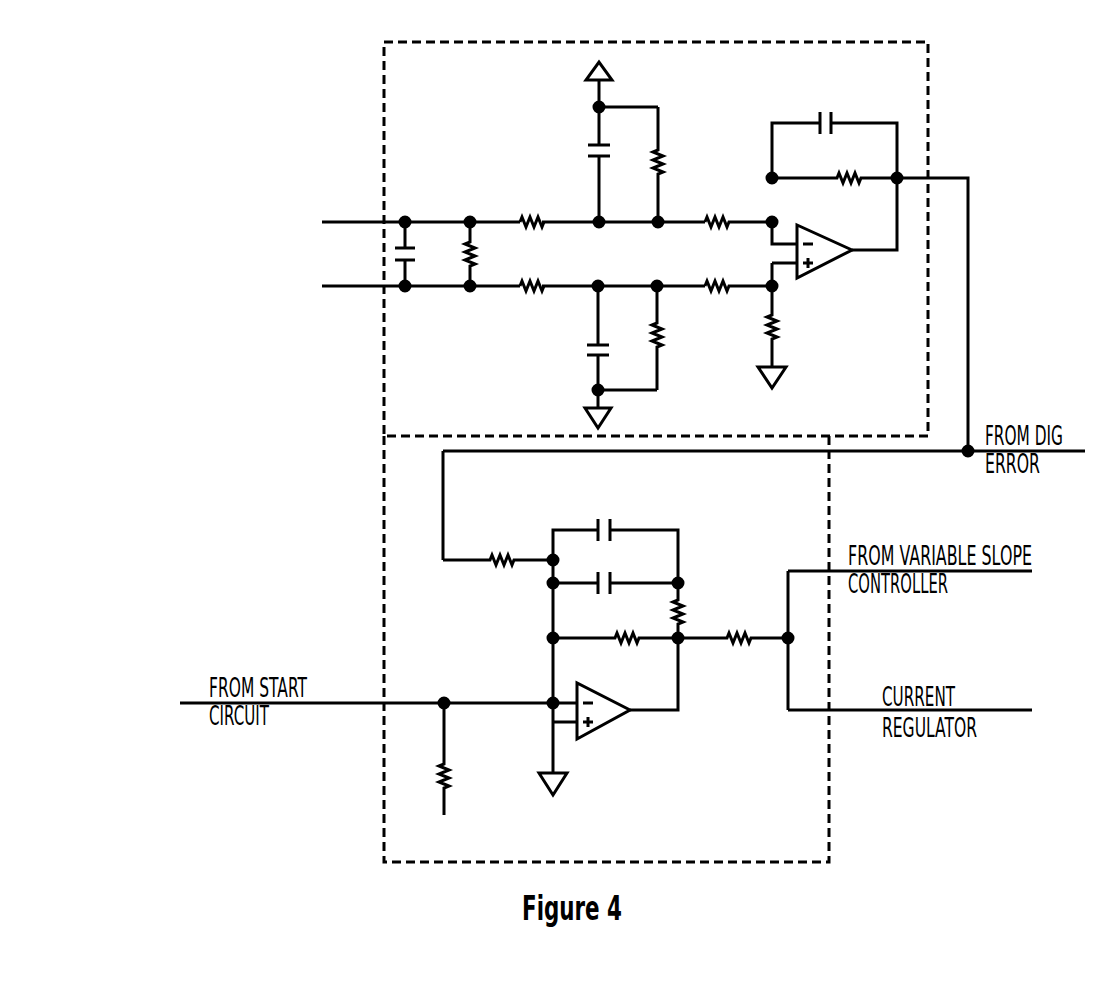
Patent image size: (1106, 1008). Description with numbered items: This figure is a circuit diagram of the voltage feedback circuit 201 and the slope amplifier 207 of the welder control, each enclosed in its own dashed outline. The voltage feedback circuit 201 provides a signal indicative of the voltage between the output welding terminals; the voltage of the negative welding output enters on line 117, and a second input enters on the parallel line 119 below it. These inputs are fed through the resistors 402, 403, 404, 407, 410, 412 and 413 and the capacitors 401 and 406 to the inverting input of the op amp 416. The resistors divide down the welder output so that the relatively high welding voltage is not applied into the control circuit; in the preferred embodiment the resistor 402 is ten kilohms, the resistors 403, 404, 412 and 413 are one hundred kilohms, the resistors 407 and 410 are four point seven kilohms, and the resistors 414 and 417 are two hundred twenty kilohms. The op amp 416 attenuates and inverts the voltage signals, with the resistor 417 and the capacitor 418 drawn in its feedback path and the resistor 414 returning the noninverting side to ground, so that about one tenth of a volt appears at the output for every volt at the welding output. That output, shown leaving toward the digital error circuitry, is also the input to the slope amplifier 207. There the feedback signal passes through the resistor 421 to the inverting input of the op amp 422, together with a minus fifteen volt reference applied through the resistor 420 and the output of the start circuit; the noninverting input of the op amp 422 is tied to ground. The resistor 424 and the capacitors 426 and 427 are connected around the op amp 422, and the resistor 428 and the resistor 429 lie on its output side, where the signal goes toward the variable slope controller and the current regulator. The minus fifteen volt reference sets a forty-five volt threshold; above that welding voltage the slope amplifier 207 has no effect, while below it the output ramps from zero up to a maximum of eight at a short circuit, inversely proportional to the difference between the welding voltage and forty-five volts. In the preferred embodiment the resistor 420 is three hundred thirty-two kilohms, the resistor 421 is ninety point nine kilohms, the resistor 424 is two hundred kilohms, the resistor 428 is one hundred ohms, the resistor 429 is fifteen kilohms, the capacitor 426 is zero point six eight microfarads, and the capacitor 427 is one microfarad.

The voltage feedback circuit 201 is at (384, 104).
The slope amplifier 207 is at (384, 598).
The line 117 is at (513, 205).
The input line 119 is at (513, 269).
The capacitor 401 is at (436, 254).
The resistor 402 is at (500, 254).
The resistor 403 is at (557, 207).
The resistor 404 is at (558, 266).
The capacitor 406 is at (613, 148).
The resistor 407 is at (668, 160).
The resistor 410 is at (661, 332).
The resistor 412 is at (741, 207).
The resistor 413 is at (741, 268).
The resistor 414 is at (780, 326).
The op amp 416 is at (840, 240).
The resistor 417 is at (871, 166).
The capacitor 418 is at (833, 121).
The resistor 420 is at (452, 768).
The resistor 421 is at (526, 544).
The op amp 422 is at (620, 693).
The resistor 424 is at (648, 621).
The capacitor 426 is at (612, 578).
The capacitor 427 is at (628, 513).
The resistor 428 is at (682, 606).
The resistor 429 is at (761, 621).